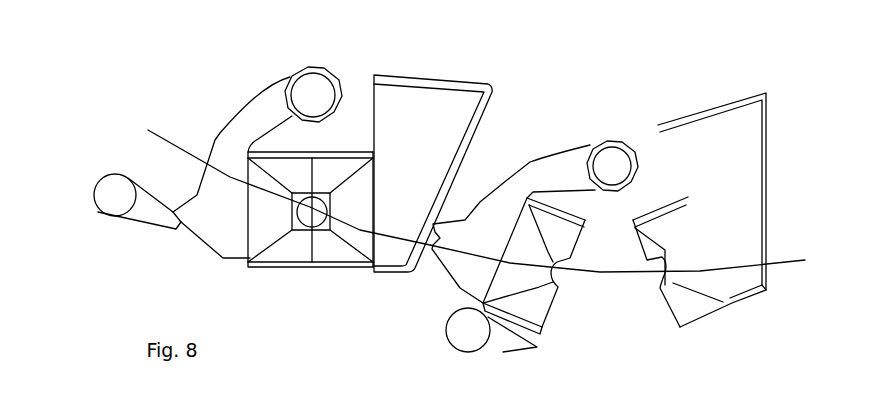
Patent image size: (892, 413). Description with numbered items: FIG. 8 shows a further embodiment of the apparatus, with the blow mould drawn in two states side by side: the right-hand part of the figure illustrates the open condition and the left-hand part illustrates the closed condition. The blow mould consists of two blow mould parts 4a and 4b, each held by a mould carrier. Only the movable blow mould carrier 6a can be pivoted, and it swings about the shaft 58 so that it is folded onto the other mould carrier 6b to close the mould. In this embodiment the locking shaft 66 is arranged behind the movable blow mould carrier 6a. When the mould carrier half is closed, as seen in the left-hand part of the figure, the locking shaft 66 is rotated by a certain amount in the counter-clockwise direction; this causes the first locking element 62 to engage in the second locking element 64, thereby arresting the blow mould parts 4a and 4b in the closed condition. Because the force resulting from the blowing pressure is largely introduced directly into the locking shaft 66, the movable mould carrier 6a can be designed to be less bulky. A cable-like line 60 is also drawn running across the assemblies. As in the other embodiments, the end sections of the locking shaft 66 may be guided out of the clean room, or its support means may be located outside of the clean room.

The blow mould part 4a is at (265, 188).
The blow mould part 4b is at (353, 143).
The movable blow mould carrier 6a is at (230, 173).
The mould carrier 6b is at (429, 142).
The shaft 58 is at (315, 100).
The cable 60 is at (165, 177).
The first locking element 62 is at (147, 205).
The second locking element 64 is at (185, 213).
The locking shaft 66 is at (108, 208).